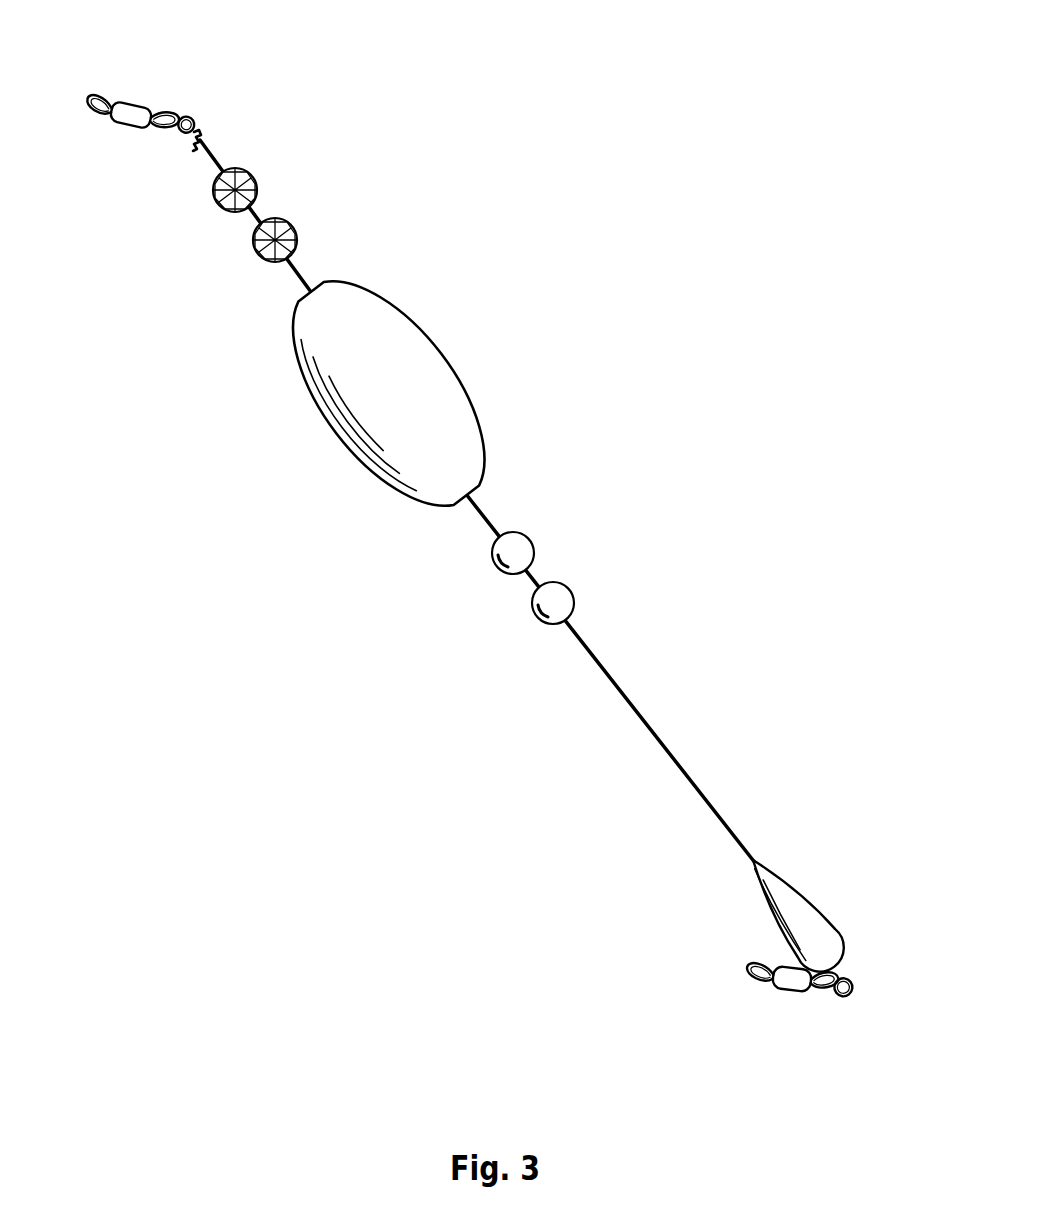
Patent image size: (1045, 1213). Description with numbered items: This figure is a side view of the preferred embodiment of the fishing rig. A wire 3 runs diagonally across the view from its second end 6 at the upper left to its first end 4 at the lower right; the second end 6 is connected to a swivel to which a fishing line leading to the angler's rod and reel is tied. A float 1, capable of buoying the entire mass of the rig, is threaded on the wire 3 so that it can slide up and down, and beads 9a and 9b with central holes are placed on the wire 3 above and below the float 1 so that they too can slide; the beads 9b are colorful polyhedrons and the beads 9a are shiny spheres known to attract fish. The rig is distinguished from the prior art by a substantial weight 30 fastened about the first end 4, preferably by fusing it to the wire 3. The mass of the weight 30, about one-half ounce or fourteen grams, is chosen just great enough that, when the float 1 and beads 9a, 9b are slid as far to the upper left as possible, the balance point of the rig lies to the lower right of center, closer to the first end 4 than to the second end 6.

The float 1 is at (392, 338).
The wire 3 is at (665, 740).
The first end 4 is at (843, 953).
The second end 6 is at (205, 137).
The beads 9a is at (557, 597).
The beads 9b is at (240, 190).
The weight 30 is at (812, 925).